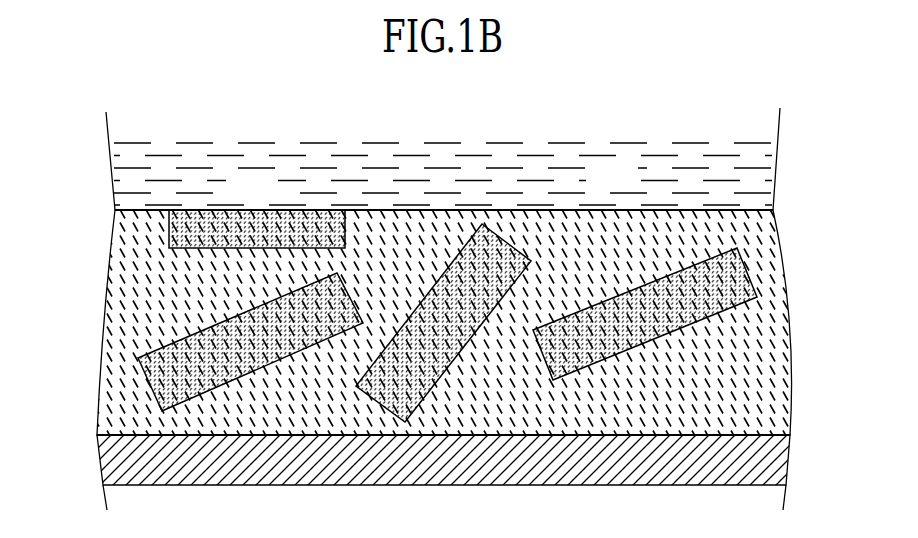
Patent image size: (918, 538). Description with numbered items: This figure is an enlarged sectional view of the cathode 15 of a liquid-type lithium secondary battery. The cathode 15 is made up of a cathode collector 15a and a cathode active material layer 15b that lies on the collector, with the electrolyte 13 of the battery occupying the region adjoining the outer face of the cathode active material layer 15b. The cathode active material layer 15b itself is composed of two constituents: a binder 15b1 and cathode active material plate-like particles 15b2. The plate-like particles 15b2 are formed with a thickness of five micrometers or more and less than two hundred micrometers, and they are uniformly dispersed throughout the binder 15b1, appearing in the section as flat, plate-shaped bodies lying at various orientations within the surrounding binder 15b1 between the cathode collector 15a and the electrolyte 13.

The electrolyte 13 is at (762, 171).
The cathode 15 is at (449, 335).
The cathode collector 15a is at (106, 462).
The cathode active material layer 15b is at (417, 298).
The binder 15b1 is at (611, 226).
The cathode active material plate-like particles 15b2 is at (250, 218).